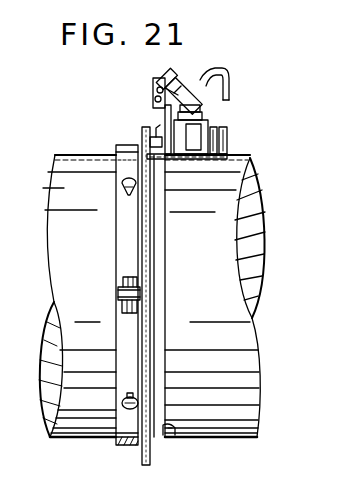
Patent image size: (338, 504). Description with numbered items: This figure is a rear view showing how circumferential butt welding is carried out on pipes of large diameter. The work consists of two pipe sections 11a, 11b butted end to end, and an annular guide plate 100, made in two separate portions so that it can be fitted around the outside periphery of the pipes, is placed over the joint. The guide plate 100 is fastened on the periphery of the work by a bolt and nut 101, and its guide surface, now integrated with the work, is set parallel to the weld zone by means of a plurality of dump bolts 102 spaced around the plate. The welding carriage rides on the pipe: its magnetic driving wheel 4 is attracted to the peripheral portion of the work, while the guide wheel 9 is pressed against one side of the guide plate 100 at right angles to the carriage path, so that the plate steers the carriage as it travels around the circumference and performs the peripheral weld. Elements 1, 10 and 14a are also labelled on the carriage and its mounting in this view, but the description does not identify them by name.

The welding torch 1 is at (208, 121).
The magnetic driving wheel 4 is at (228, 145).
The guide wheel 9 is at (167, 159).
The guide bracket 10 is at (173, 436).
The work 11a is at (225, 433).
The work 11b is at (78, 433).
The cable 14a is at (160, 128).
The annular guide plate 100 is at (145, 457).
The bolt and nut 101 is at (118, 283).
The dump bolt 102 is at (122, 189).